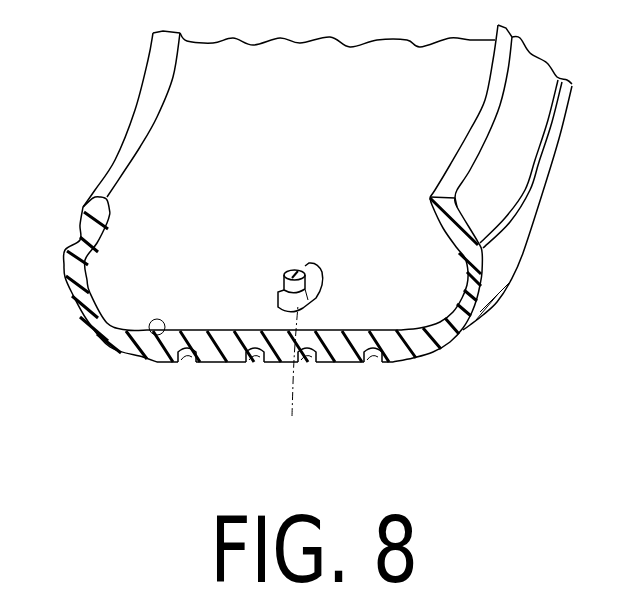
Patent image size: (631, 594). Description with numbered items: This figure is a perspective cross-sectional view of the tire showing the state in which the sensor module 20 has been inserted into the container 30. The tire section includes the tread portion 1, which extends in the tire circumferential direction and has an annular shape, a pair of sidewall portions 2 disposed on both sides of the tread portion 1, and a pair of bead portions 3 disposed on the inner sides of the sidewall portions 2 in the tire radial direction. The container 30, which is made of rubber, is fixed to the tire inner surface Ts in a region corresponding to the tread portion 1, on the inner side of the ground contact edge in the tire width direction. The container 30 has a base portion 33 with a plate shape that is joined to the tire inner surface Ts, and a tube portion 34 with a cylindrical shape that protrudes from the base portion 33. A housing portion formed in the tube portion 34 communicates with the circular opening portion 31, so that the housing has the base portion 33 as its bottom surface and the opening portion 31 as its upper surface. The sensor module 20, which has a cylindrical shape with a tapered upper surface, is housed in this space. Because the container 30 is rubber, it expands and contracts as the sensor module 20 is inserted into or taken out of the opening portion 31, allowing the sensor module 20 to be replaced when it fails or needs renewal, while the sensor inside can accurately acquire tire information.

The tread portion 1 is at (239, 363).
The sidewall portion 2 is at (62, 295).
The bead portion 3 is at (82, 218).
The sensor module 20 is at (296, 378).
The container 30 is at (331, 290).
The opening portion 31 is at (287, 267).
The base portion 33 is at (277, 296).
The tube portion 34 is at (318, 289).
The tire inner surface Ts is at (157, 336).